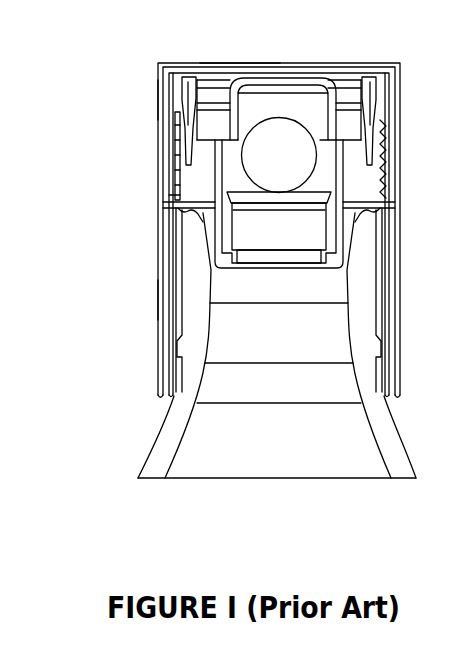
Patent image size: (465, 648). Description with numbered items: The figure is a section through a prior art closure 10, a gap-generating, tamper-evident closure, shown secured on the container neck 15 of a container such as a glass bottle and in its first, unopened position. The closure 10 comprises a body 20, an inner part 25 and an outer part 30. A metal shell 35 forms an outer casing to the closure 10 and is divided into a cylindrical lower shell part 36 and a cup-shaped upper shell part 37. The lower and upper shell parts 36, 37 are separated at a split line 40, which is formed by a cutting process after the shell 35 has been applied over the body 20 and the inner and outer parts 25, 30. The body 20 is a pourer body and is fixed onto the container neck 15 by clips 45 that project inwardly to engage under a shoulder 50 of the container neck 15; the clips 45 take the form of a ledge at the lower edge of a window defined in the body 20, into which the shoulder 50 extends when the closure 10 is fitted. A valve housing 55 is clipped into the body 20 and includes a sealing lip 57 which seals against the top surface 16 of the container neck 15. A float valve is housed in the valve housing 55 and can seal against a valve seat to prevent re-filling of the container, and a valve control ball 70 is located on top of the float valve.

The prior art closure 10 is at (127, 112).
The container neck 15 is at (101, 436).
The top surface 16 is at (170, 211).
The body 20 is at (398, 178).
The inner part 25 is at (164, 168).
The outer part 30 is at (158, 102).
The metal shell 35 is at (154, 298).
The lower shell part 36 is at (160, 248).
The upper shell part 37 is at (237, 63).
The split line 40 is at (165, 193).
The clips 45 is at (160, 265).
The shoulder 50 is at (382, 258).
The valve housing 55 is at (172, 139).
The sealing lip 57 is at (370, 220).
The valve control ball 70 is at (318, 162).